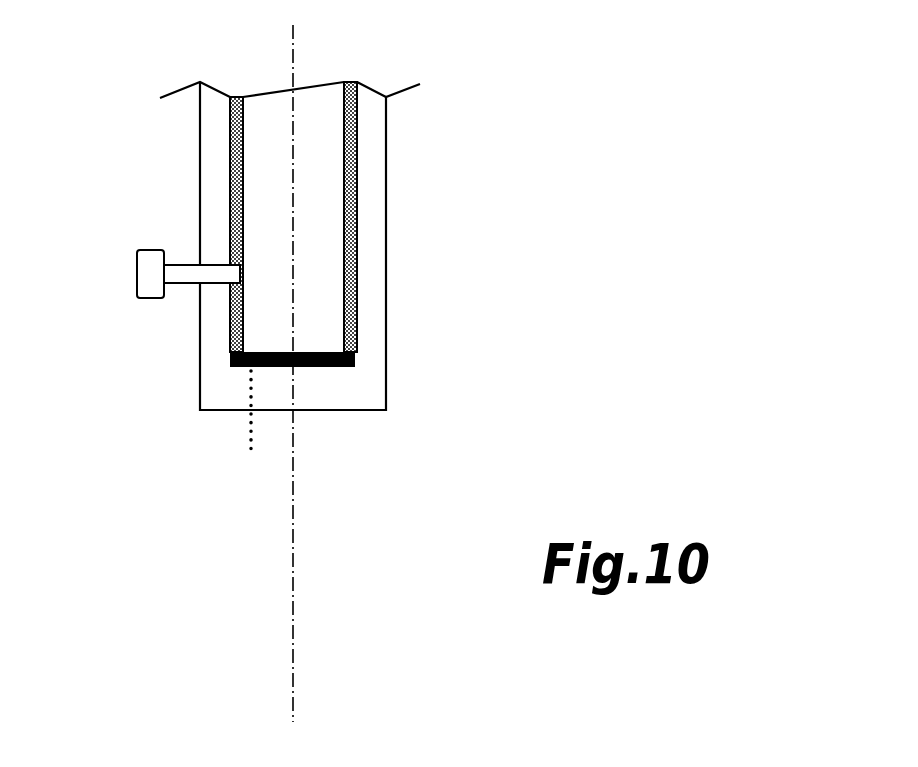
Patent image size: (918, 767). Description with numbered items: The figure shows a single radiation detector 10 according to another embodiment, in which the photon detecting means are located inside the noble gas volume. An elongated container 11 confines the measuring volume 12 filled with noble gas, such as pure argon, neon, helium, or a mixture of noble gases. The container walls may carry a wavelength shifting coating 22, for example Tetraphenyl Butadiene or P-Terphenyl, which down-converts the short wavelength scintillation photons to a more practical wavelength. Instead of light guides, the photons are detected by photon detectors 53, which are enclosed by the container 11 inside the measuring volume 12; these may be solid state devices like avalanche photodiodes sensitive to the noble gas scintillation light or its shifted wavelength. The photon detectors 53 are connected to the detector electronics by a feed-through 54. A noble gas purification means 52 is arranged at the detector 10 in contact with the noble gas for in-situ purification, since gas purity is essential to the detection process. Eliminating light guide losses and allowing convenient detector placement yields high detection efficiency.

The radiation detector 10 is at (473, 107).
The container 11 is at (372, 188).
The measuring volume 12 is at (275, 150).
The wavelength shifting coating 22 is at (357, 272).
The noble gas purification means 52 is at (153, 273).
The photon detectors 53 is at (353, 366).
The feed-through 54 is at (248, 433).